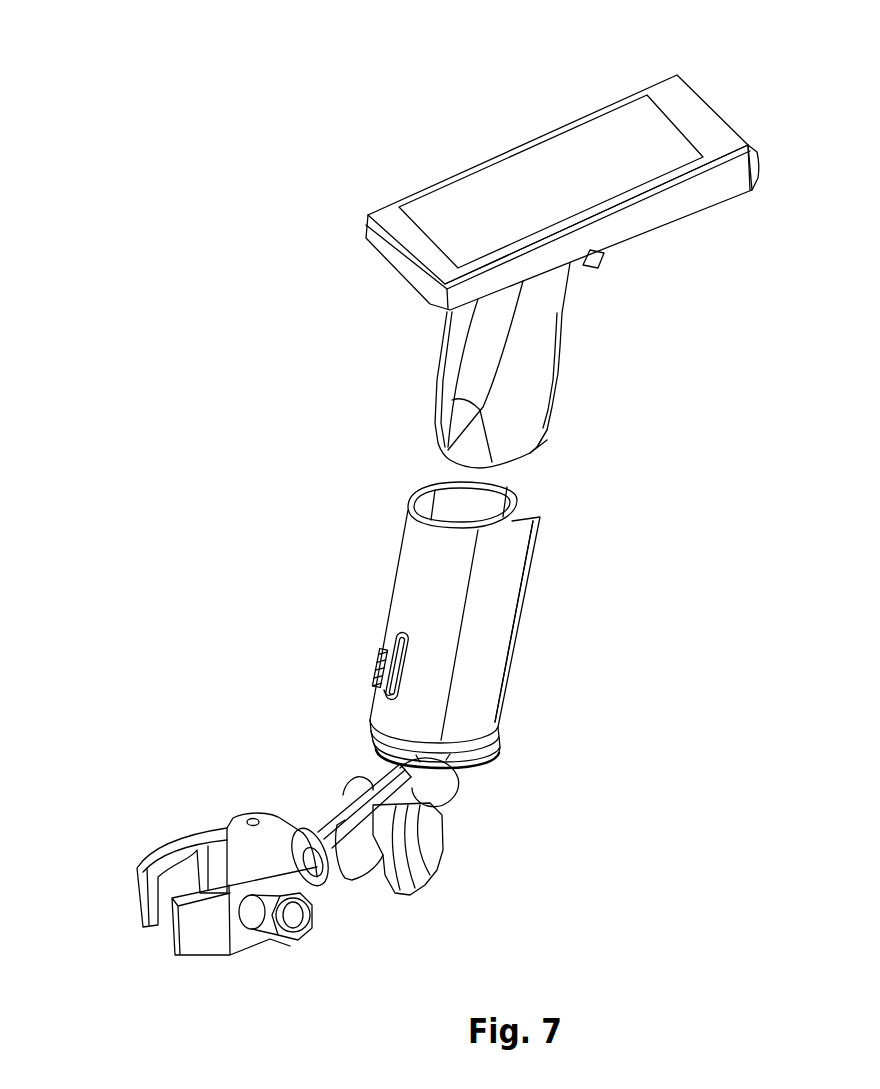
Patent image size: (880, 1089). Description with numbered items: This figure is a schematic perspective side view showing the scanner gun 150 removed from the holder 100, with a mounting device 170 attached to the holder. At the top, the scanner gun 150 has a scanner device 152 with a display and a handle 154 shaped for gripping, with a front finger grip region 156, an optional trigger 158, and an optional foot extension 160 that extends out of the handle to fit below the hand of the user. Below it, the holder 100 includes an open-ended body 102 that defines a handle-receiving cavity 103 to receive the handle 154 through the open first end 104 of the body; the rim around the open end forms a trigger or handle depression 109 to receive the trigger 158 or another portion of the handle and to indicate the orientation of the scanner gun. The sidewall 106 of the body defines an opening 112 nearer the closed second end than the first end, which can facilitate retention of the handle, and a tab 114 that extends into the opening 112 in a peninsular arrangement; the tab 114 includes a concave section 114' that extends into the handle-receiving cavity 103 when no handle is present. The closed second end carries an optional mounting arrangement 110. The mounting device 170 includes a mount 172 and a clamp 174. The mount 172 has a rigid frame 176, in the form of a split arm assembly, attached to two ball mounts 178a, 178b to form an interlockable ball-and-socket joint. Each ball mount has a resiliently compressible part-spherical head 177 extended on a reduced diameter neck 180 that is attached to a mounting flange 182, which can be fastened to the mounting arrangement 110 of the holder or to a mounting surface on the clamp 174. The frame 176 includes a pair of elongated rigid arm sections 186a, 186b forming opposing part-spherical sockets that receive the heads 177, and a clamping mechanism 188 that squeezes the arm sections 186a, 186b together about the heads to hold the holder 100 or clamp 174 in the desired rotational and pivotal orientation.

The holder 100 is at (432, 613).
The open-ended body 102 is at (432, 581).
The handle-receiving cavity 103 is at (473, 515).
The open first end 104 is at (422, 488).
The sidewall 106 is at (517, 667).
The trigger or handle depression 109 is at (512, 517).
The mounting arrangement 110 is at (470, 755).
The opening 112 is at (383, 688).
The tab 114 is at (345, 652).
The concave section 114' is at (334, 668).
The scanner gun 150 is at (597, 243).
The scanner device 152 is at (687, 73).
The handle 154 is at (438, 356).
The front finger grip region 156 is at (564, 307).
The trigger 158 is at (597, 260).
The foot extension 160 is at (552, 434).
The mounting device 170 is at (143, 823).
The mount 172 is at (457, 805).
The clamp 174 is at (227, 940).
The rigid frame 176 is at (315, 840).
The part-spherical head 177 is at (330, 870).
The ball mount 178a is at (290, 823).
The ball mount 178b is at (408, 762).
The reduced diameter neck 180 is at (325, 872).
The mounting flange 182 is at (315, 867).
The arm section 186a is at (363, 853).
The arm section 186b is at (345, 795).
The clamping mechanism 188 is at (437, 863).